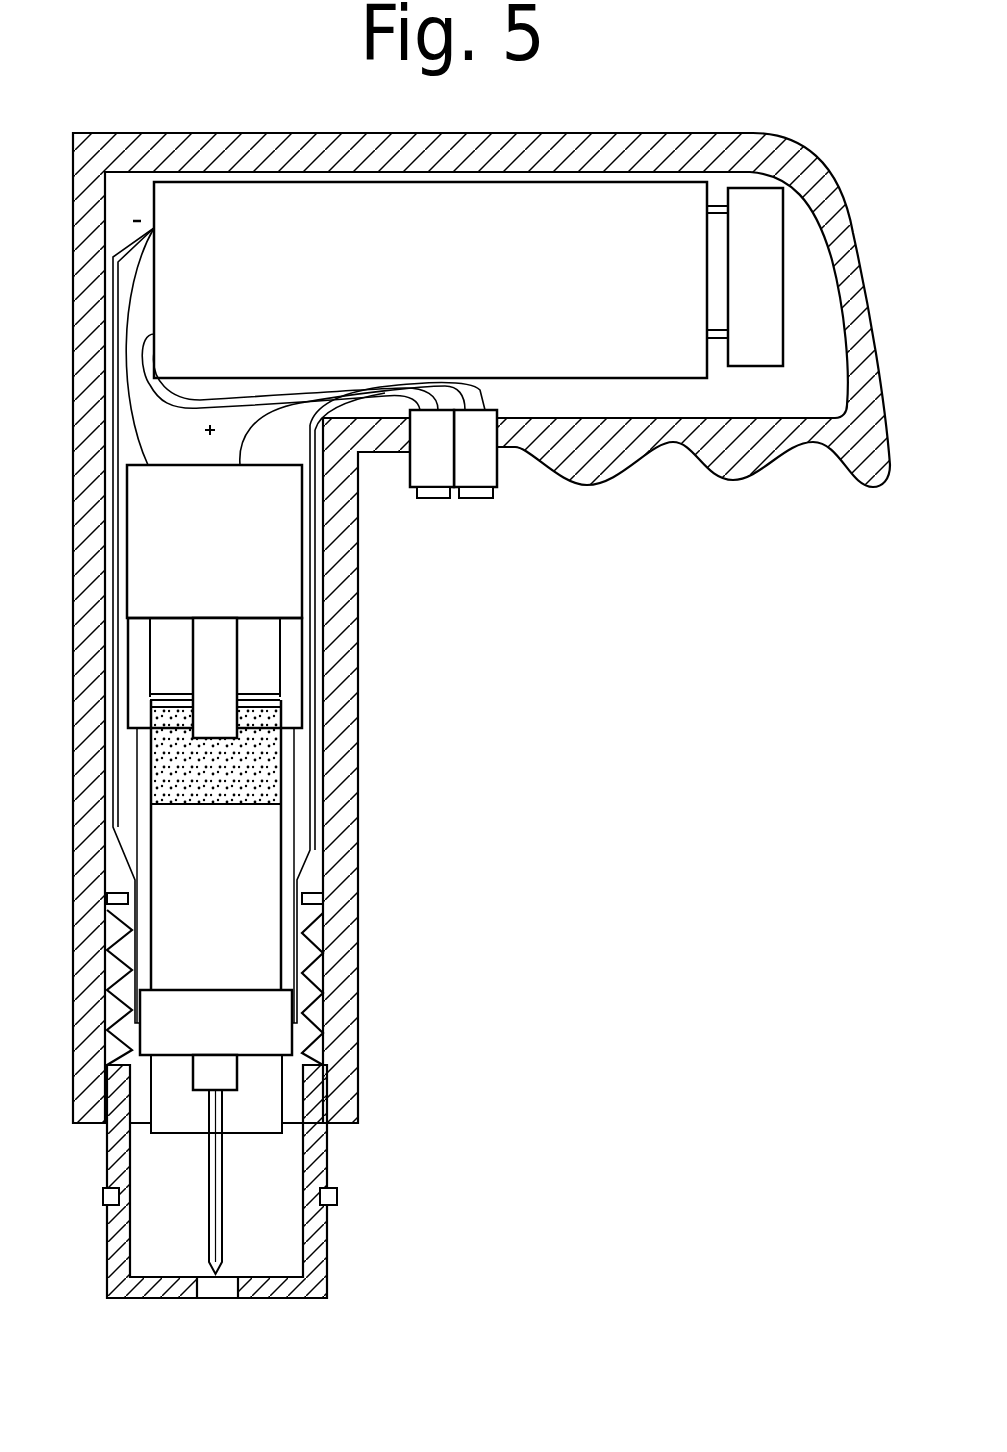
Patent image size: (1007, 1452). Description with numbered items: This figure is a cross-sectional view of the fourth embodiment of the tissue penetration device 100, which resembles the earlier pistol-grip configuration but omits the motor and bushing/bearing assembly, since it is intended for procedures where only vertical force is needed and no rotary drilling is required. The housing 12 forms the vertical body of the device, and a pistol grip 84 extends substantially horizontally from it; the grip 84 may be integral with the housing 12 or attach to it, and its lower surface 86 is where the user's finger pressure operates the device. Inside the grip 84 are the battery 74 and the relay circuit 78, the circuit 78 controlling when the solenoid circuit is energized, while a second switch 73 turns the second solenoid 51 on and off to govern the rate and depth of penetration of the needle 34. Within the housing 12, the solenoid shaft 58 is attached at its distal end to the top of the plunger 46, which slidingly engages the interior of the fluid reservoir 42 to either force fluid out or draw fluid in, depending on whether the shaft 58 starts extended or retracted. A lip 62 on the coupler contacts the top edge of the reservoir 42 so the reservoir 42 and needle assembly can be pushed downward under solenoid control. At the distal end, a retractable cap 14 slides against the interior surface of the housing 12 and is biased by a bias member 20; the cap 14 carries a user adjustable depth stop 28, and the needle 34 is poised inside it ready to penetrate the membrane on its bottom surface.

The housing 12 is at (100, 137).
The tissue penetration device 100 is at (724, 86).
The battery 74 is at (447, 297).
The relay circuit 78 is at (750, 292).
The second switch 73 is at (427, 460).
The lower surface 86 is at (707, 475).
The pistol grip 84 is at (767, 530).
The lip 62 is at (292, 657).
The solenoid shaft 58 is at (216, 682).
The plunger 46 is at (260, 755).
The fluid reservoir 42 is at (232, 914).
The bias member 20 is at (313, 960).
The second solenoid 51 is at (232, 1044).
The retractable cap 14 is at (313, 1143).
The user adjustable depth stop 28 is at (337, 1197).
The needle 34 is at (220, 1212).